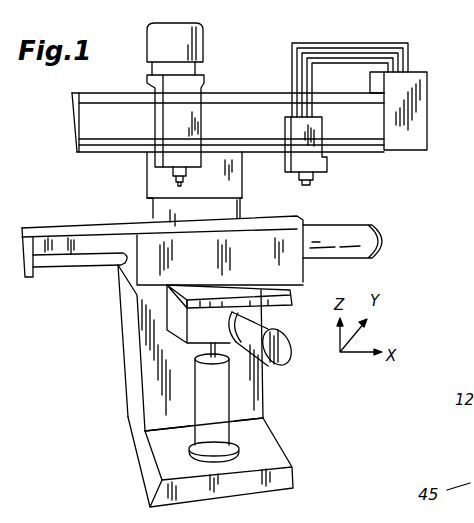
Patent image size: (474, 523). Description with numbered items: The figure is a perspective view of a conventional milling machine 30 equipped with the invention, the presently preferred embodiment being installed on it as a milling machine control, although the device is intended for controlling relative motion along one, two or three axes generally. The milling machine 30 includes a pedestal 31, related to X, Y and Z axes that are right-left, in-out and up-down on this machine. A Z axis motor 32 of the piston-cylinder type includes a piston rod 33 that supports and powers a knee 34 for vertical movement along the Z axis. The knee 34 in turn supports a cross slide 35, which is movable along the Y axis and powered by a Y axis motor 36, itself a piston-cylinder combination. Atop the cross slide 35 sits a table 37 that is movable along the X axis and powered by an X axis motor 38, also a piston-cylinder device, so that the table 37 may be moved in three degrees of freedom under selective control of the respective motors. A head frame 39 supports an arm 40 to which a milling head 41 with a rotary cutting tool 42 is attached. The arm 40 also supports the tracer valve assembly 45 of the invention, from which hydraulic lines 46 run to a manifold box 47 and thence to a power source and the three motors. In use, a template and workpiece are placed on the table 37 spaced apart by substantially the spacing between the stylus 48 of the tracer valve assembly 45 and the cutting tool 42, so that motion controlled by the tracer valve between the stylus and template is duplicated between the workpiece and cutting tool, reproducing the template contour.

The milling machine 30 is at (80, 481).
The pedestal 31 is at (265, 401).
The Z axis motor 32 is at (190, 449).
The piston rod 33 is at (210, 352).
The knee 34 is at (177, 322).
The cross slide 35 is at (289, 304).
The Y axis motor 36 is at (284, 356).
The table 37 is at (306, 279).
The X axis motor 38 is at (373, 228).
The head frame 39 is at (243, 188).
The arm 40 is at (246, 96).
The milling head 41 is at (197, 45).
The rotary cutting tool 42 is at (173, 183).
The tracer valve assembly 45 is at (327, 164).
The hydraulic lines 46 is at (403, 54).
The manifold box 47 is at (429, 96).
The stylus 48 is at (313, 185).